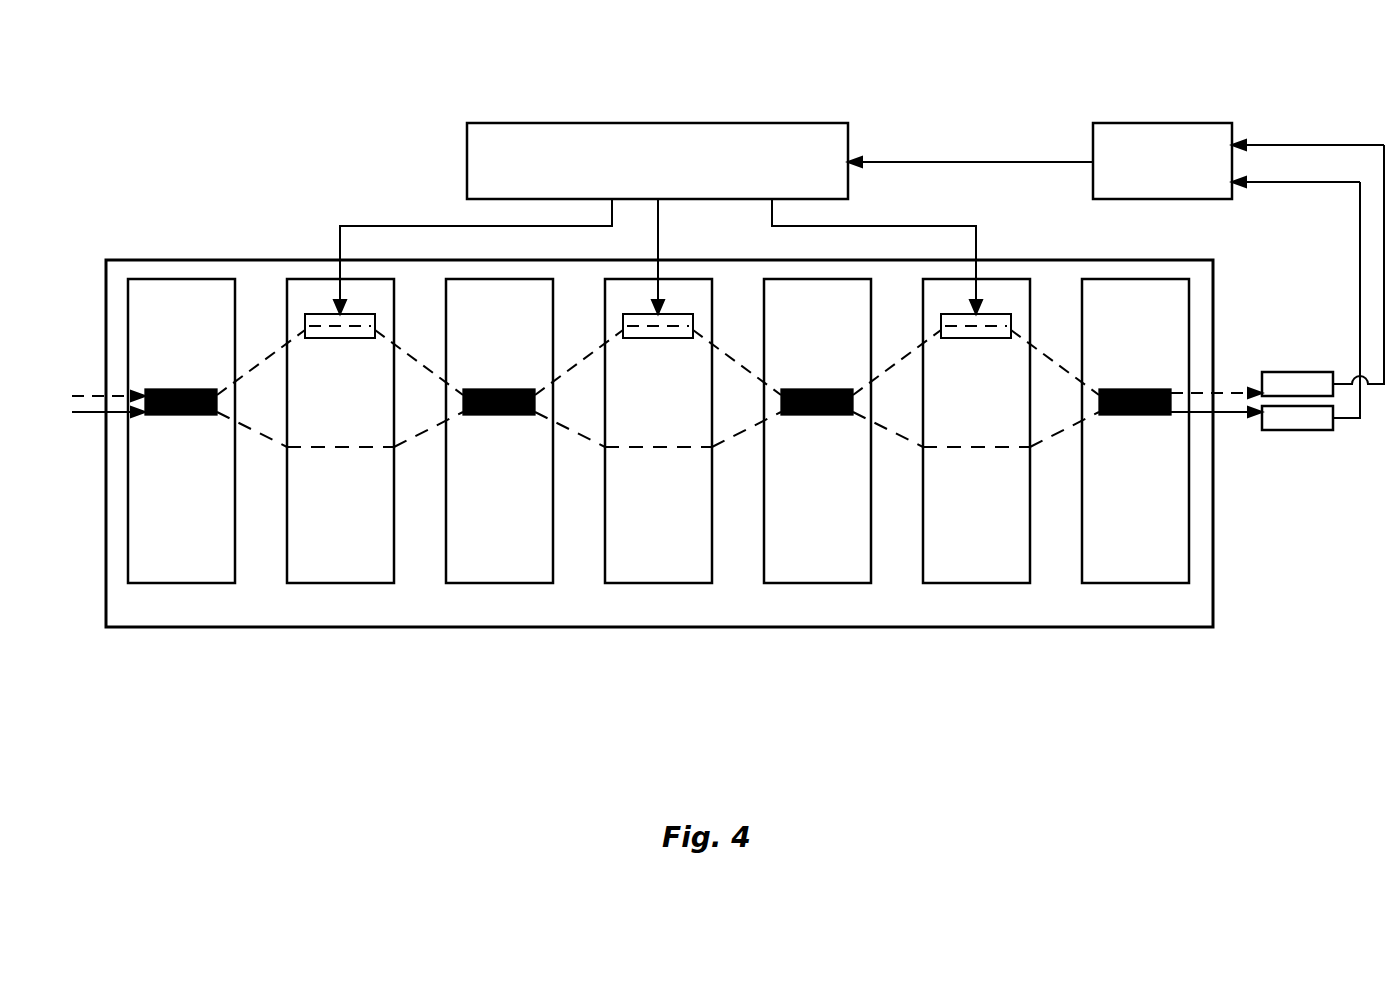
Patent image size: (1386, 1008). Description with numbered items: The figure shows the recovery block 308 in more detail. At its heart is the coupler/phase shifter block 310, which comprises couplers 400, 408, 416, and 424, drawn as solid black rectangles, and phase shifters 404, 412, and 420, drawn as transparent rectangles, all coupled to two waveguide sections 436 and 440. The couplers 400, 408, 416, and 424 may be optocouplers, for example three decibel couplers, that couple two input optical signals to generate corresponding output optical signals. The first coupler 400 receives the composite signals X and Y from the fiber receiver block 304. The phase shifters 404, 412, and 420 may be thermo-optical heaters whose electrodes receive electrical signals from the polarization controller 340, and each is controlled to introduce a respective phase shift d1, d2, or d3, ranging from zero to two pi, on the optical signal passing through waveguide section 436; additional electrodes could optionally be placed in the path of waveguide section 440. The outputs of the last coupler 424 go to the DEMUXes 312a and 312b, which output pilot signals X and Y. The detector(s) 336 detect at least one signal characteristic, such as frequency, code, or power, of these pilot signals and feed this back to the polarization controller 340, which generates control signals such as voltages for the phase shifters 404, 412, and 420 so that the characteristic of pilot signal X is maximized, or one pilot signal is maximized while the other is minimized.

The recovery block 308 is at (240, 134).
The coupler/phase shifter block 310 is at (659, 440).
The fiber receiver block 304 is at (80, 380).
The polarization controller 340 is at (658, 218).
The detector(s) 336 is at (1116, 160).
The coupler 400 is at (181, 431).
The phase shifter 404 is at (361, 408).
The coupler 408 is at (499, 431).
The phase shifter 412 is at (665, 403).
The coupler 416 is at (817, 431).
The phase shifter 420 is at (981, 403).
The coupler 424 is at (1135, 431).
The waveguide section 436 is at (257, 322).
The waveguide section 440 is at (257, 469).
The phase shift d1 is at (363, 314).
The phase shift d2 is at (680, 314).
The phase shift d3 is at (995, 314).
The DEMUX 312a is at (1323, 271).
The DEMUX 312b is at (1311, 306).